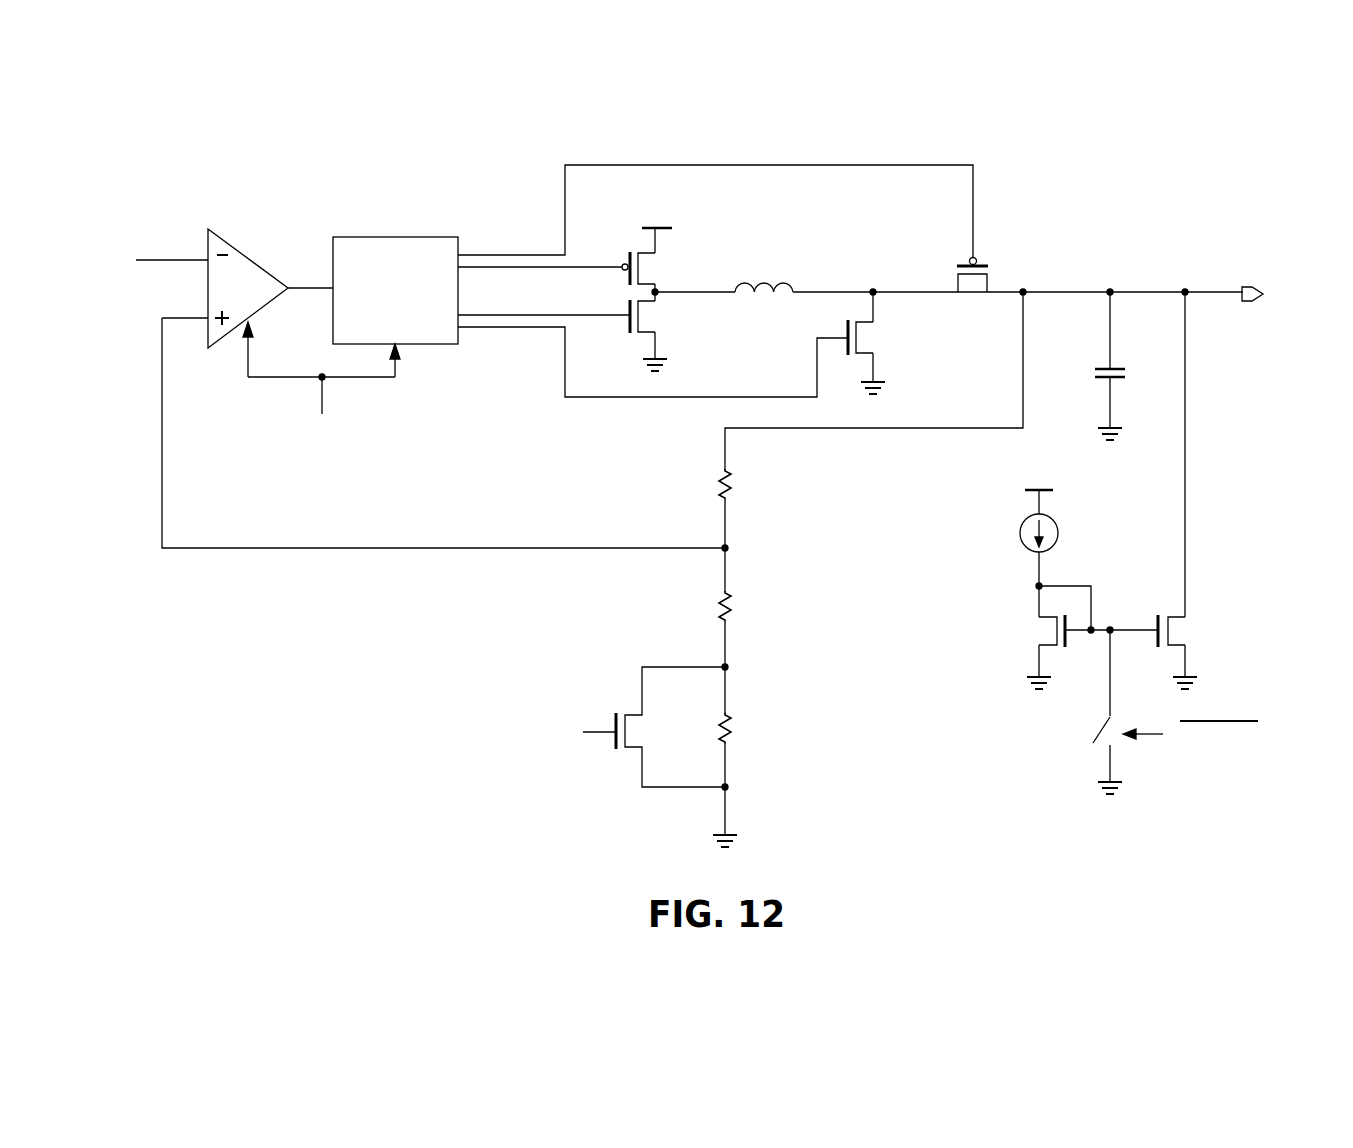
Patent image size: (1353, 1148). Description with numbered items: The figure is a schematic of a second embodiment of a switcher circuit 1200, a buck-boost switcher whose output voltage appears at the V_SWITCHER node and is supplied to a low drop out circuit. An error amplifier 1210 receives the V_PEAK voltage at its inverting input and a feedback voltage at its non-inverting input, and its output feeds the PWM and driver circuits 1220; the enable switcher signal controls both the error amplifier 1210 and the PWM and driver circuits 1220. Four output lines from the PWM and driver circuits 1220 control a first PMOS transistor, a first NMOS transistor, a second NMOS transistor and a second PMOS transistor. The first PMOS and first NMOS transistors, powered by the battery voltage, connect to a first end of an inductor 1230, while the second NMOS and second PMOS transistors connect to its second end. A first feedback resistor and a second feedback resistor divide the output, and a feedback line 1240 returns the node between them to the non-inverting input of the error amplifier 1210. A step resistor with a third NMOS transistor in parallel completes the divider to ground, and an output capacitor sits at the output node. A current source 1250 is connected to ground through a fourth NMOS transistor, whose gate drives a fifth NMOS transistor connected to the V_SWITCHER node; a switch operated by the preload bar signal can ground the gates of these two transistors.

The switcher circuit 1200 is at (1194, 133).
The error amplifier 1210 is at (247, 255).
The PWM and driver circuits 1220 is at (413, 235).
The inductor 1230 is at (773, 282).
The feedback line 1240 is at (463, 546).
The current source 1250 is at (1059, 529).